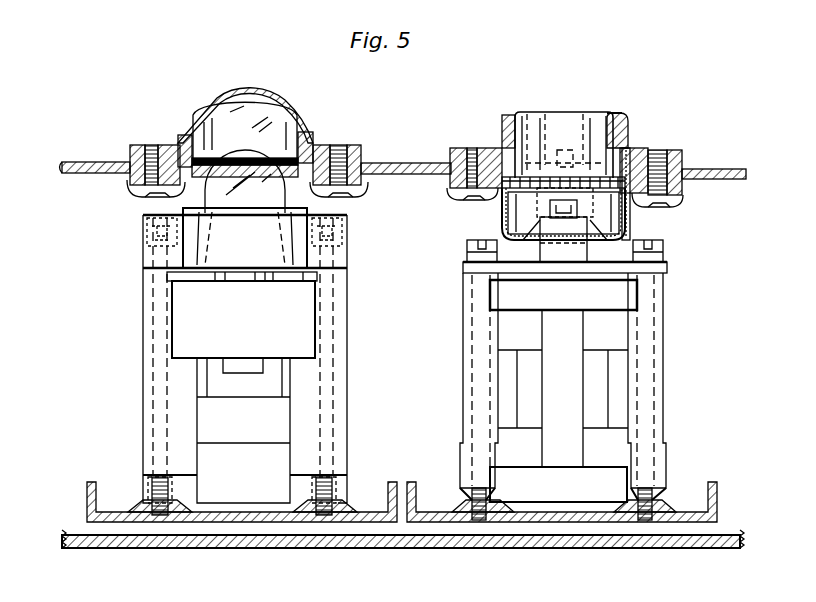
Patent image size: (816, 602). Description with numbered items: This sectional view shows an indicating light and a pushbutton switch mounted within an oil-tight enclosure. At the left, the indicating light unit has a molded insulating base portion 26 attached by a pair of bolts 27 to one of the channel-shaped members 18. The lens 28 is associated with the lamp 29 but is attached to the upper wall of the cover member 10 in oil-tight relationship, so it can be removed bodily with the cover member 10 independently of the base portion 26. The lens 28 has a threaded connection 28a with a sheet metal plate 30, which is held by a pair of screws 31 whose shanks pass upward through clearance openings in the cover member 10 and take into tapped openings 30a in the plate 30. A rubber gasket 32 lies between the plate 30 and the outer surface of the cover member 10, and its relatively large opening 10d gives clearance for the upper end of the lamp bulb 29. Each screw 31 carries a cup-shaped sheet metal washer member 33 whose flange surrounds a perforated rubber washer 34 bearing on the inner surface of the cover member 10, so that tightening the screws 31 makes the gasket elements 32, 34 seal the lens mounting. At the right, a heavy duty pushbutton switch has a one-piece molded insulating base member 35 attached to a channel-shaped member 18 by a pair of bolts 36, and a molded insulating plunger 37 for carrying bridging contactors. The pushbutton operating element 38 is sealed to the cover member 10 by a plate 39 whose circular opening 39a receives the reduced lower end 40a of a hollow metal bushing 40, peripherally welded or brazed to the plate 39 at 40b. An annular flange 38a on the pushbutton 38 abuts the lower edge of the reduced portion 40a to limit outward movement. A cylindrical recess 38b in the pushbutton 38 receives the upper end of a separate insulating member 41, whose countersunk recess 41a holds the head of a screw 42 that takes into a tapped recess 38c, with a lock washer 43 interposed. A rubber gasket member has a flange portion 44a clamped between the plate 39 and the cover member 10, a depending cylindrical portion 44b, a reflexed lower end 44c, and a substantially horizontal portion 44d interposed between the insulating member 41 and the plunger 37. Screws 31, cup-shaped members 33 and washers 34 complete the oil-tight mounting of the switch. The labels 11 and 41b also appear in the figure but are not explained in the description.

The cover member 10 is at (63, 168).
The opening in gasket 10d is at (153, 228).
The base plate 11 is at (404, 549).
The channel-shaped members 18 is at (88, 506).
The molded insulating base portion 26 is at (142, 319).
The bolts 27 is at (152, 493).
The lens 28 is at (257, 91).
The threaded connection 28a is at (312, 148).
The lamp 29 is at (236, 172).
The sheet metal plate 30 is at (362, 162).
The tapped openings 30a is at (165, 150).
The screws 31 is at (145, 198).
The gasket 32 is at (133, 160).
The cup-shaped sheet metal washer member 33 is at (128, 188).
The perforated rubber washer 34 is at (110, 162).
The molded insulating base member 35 is at (664, 372).
The bolts 36 is at (470, 250).
The molded insulating plunger 37 is at (582, 250).
The pushbutton operating element 38 is at (565, 115).
The annular flange 38a is at (522, 120).
The cylindrical recess 38b is at (527, 128).
The tapped recess 38c is at (583, 150).
The plate 39 is at (672, 152).
The circular opening 39a is at (642, 180).
The hollow metal bushing 40 is at (624, 130).
The reduced lower end of bushing 40a is at (619, 118).
The peripheral weld or braze 40b is at (630, 160).
The insulating member 41 is at (635, 228).
The countersunk recess 41a is at (510, 222).
The switch guide 41b is at (546, 150).
The screw 42 is at (572, 243).
The lock washer 43 is at (505, 200).
The flange portion of gasket member 44a is at (688, 174).
The depending cylindrical portion 44b is at (640, 215).
The reflexed lower end 44c is at (540, 236).
The horizontal portion 44d is at (546, 222).